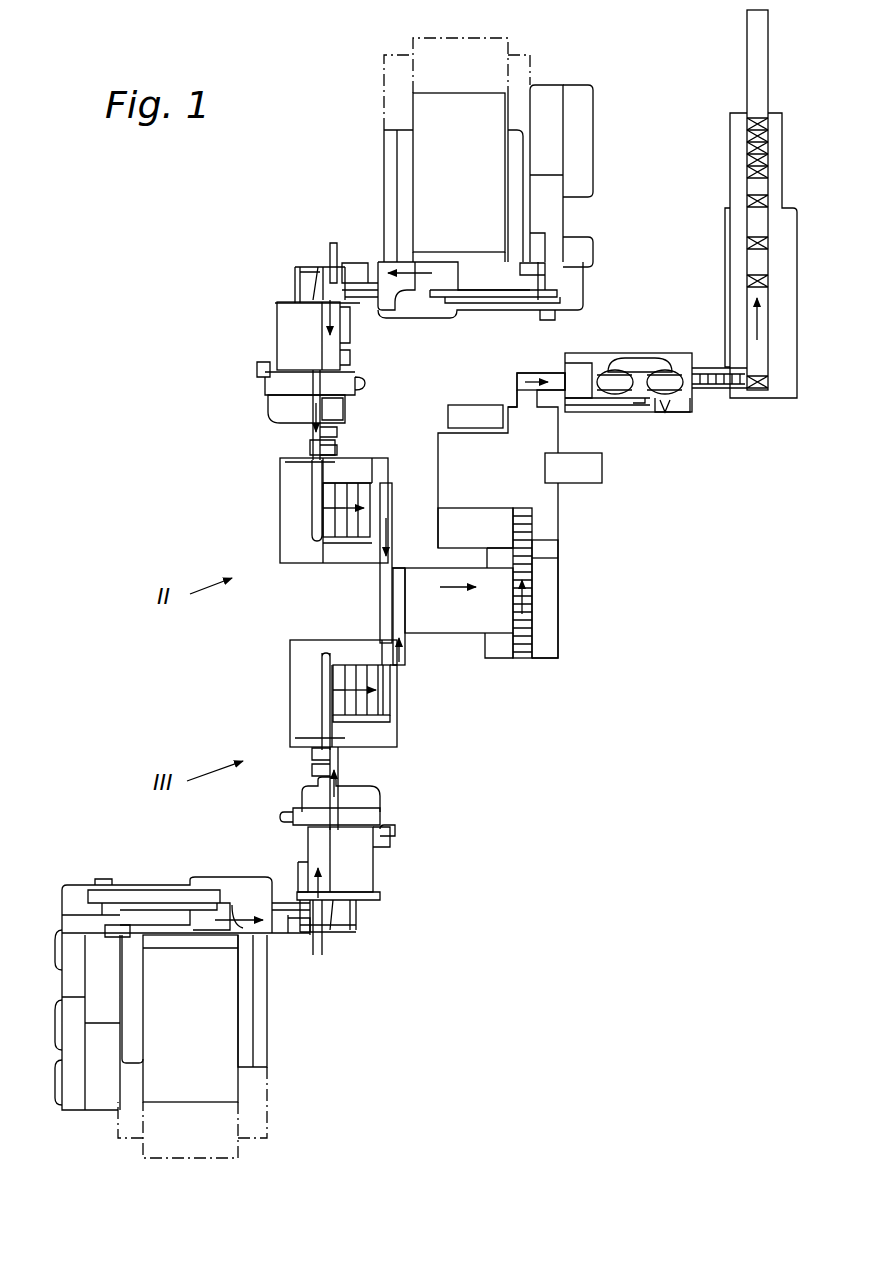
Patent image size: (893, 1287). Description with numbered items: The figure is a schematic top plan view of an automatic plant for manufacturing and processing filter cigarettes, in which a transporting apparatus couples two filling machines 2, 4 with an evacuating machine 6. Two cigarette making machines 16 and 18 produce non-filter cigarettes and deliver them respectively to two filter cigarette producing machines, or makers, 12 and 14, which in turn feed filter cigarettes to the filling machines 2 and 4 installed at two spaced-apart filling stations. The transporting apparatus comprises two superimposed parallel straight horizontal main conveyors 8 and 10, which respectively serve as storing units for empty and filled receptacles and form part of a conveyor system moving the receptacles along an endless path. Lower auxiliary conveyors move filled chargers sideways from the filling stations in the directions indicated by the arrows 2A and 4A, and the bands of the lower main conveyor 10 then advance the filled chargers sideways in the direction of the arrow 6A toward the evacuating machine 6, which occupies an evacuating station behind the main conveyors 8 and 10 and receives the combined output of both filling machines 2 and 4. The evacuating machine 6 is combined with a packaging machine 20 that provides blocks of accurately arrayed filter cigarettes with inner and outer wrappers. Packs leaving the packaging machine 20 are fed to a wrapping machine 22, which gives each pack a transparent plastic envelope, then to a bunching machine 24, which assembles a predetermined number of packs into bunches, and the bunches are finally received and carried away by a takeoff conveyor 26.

The filling machine 2 is at (345, 561).
The arrow indicating sideways movement of filled chargers 2A is at (386, 532).
The filling machine 4 is at (310, 670).
The arrow indicating sideways movement of filled chargers 4A is at (404, 657).
The evacuating machine 6 is at (554, 617).
The arrow indicating direction of the lower main conveyor 6A is at (450, 583).
The main conveyor 8 is at (452, 613).
The lower main conveyor 10 is at (478, 624).
The filter cigarette producing machine 12 is at (311, 354).
The filter cigarette producing machine 14 is at (364, 870).
The cigarette making machine 16 is at (471, 169).
The cigarette making machine 18 is at (196, 1042).
The packaging machine 20 is at (497, 493).
The wrapping machine 22 is at (677, 353).
The bunching machine 24 is at (738, 283).
The takeoff conveyor 26 is at (750, 58).